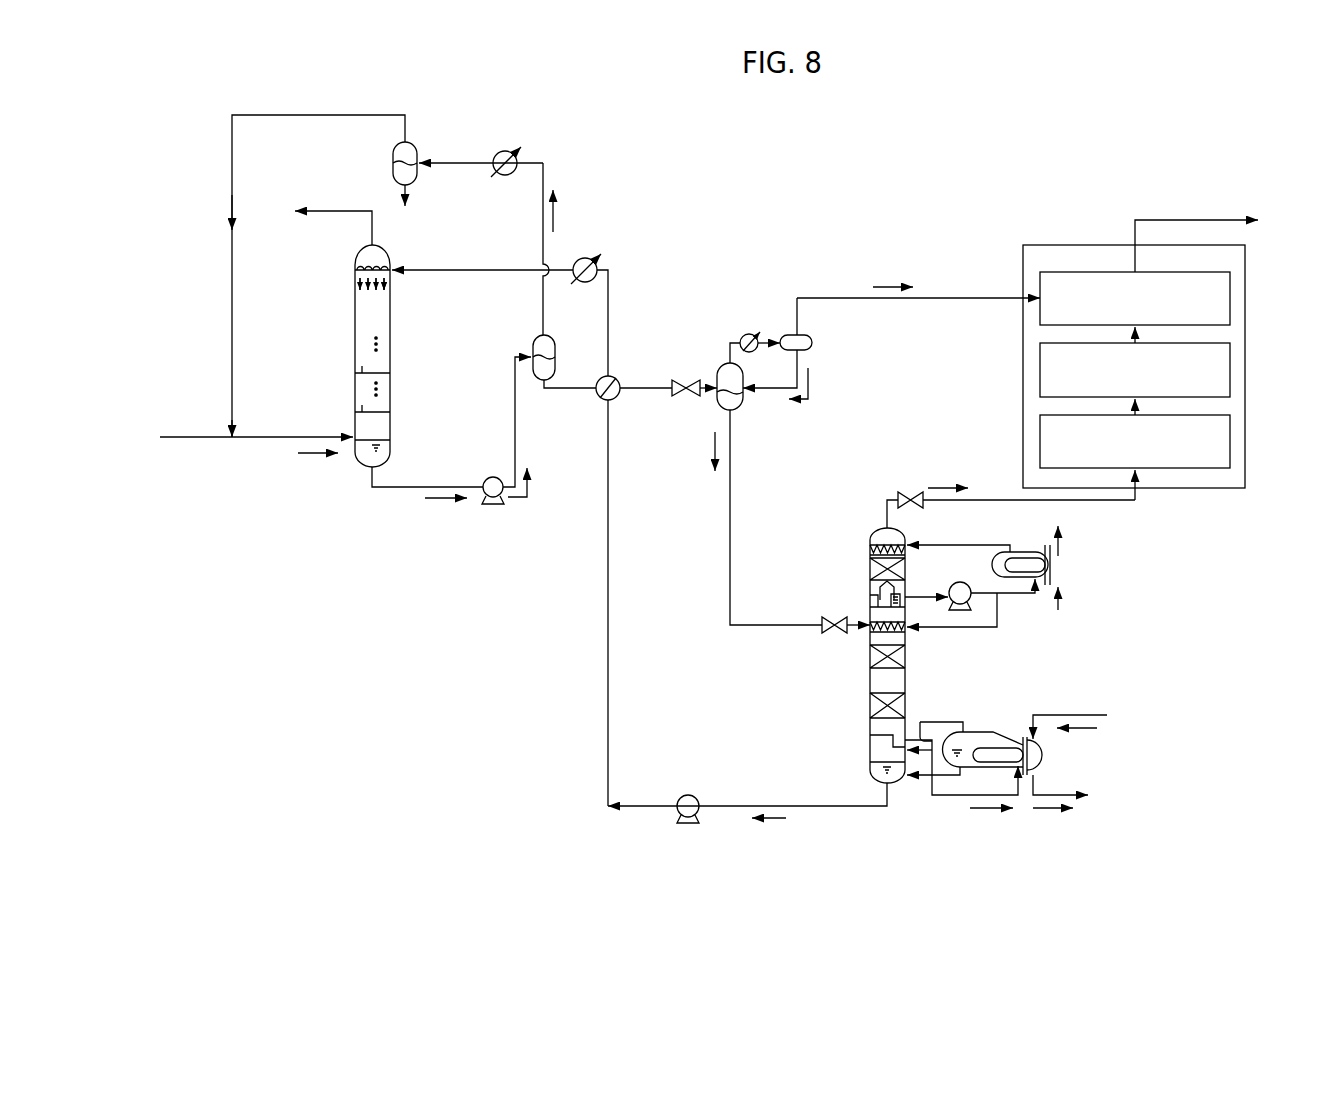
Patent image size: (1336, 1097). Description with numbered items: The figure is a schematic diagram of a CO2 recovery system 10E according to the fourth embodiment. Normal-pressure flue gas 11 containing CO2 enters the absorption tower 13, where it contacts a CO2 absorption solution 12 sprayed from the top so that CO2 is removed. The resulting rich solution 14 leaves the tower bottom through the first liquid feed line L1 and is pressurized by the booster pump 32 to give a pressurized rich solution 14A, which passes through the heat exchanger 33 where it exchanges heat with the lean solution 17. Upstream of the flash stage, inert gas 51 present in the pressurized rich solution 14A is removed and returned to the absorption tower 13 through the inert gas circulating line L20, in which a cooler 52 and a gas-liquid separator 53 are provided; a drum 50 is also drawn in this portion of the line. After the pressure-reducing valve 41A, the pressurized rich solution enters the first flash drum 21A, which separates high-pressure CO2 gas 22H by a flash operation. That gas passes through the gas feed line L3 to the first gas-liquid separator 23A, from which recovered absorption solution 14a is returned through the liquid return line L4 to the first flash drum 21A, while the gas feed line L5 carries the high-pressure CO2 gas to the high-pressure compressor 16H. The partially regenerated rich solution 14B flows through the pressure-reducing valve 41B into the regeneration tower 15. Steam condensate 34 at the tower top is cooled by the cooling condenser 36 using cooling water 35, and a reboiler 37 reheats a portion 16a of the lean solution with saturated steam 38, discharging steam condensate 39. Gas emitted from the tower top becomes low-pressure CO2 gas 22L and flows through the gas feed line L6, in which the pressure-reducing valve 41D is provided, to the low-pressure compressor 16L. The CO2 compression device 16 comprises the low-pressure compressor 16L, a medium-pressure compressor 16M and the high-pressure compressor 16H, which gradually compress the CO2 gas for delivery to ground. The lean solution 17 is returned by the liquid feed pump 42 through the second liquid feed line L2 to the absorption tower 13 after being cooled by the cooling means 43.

The CO2 recovery system 10E is at (800, 192).
The flue gas 11 is at (312, 457).
The CO2 absorption solution 12 is at (353, 278).
The absorption tower 13 is at (338, 335).
The rich solution 14 is at (439, 502).
The pressurized rich solution 14A is at (518, 502).
The partially regenerated rich solution 14B is at (712, 447).
The absorption solution 14a is at (808, 404).
The regeneration tower 15 is at (910, 671).
The CO2 compression device 16 is at (1210, 490).
The high-pressure compressor 16H is at (1232, 298).
The medium-pressure compressor 16M is at (1232, 370).
The low-pressure compressor 16L is at (1232, 443).
The portion of lean solution 16a is at (983, 811).
The lean solution 17 is at (773, 822).
The first flash drum 21A is at (718, 362).
The high-pressure CO2 gas 22H is at (878, 283).
The low-pressure CO2 gas 22L is at (928, 485).
The first gas-liquid separator 23A is at (812, 342).
The booster pump 32 is at (486, 479).
The heat exchanger 33 is at (597, 378).
The steam condensate 34 is at (906, 598).
The cooling water 35 is at (1062, 598).
The cooling condenser 36 is at (1035, 550).
The reboiler 37 is at (993, 727).
The saturated steam 38 is at (1083, 731).
The steam condensate 39 is at (1043, 811).
The pressure-reducing valve 41A is at (672, 380).
The pressure-reducing valve 41B is at (830, 617).
The pressure-reducing valve 41D is at (914, 505).
The liquid feed pump 42 is at (690, 821).
The cooling means 43 is at (590, 283).
The flash drum 50 is at (534, 344).
The inert gas 51 is at (556, 217).
The cooler 52 is at (505, 176).
The gas-liquid separator 53 is at (417, 172).
The first liquid feed line L1 is at (393, 489).
The second liquid feed line L2 is at (728, 800).
The gas feed line L3 is at (732, 351).
The liquid return line L4 is at (773, 389).
The gas feed line L5 is at (811, 298).
The gas feed line L6 is at (1121, 501).
The inert gas circulating line L20 is at (233, 148).